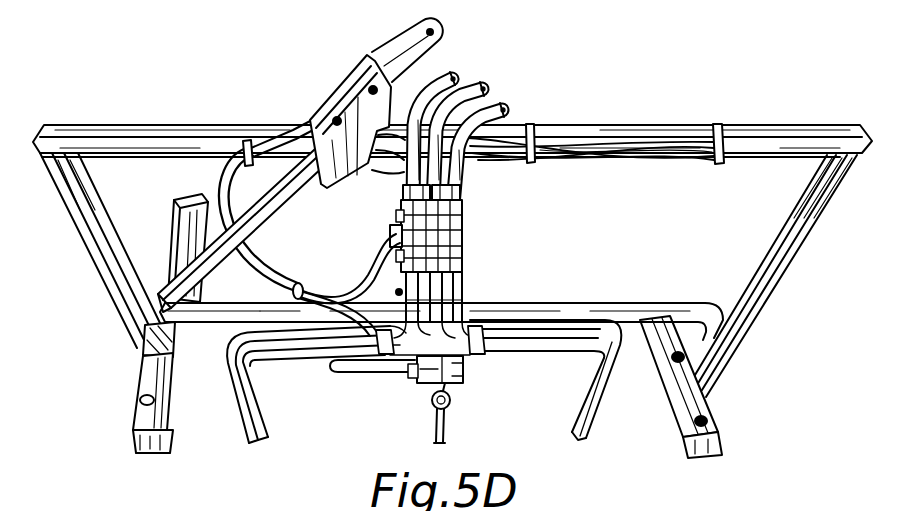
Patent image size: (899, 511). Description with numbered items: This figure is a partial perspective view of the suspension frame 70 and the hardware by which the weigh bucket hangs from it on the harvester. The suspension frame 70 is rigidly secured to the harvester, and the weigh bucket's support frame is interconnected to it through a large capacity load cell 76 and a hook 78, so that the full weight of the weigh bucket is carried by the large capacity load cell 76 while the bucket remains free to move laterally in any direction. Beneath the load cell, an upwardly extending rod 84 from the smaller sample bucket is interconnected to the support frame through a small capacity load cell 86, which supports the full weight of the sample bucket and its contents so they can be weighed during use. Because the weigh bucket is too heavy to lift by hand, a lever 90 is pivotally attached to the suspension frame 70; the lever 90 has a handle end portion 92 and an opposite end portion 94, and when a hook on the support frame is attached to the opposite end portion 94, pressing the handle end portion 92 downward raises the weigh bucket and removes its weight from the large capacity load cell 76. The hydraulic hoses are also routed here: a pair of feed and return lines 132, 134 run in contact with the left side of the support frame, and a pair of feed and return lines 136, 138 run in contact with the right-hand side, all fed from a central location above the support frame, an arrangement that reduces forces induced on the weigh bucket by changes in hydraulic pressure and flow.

The suspension frame 70 is at (787, 258).
The large capacity load cell 76 is at (457, 220).
The hook 78 is at (457, 285).
The upwardly extending rod 84 is at (443, 440).
The small capacity load cell 86 is at (464, 368).
The lever 90 is at (278, 197).
The handle end portion 92 is at (168, 246).
The opposite end portion 94 is at (440, 31).
The feed and return line 132 is at (244, 332).
The feed and return line 134 is at (267, 360).
The feed and return line 136 is at (600, 323).
The feed and return line 138 is at (650, 312).